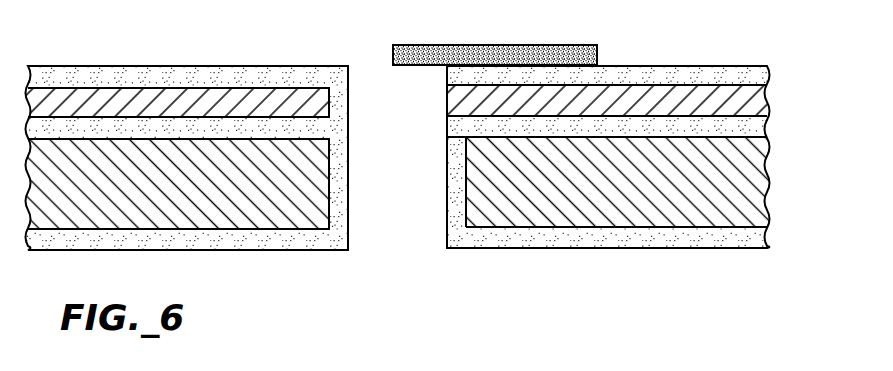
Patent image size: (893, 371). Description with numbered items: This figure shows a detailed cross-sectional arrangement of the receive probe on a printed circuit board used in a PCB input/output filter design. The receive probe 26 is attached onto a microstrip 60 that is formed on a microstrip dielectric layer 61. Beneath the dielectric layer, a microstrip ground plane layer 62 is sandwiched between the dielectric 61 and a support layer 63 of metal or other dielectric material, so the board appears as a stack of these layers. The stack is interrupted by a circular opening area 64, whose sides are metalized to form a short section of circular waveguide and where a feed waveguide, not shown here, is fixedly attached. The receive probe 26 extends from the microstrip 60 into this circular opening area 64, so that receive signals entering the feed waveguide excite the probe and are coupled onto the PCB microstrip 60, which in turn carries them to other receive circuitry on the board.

The receive probe 26 is at (460, 44).
The microstrip 60 is at (762, 76).
The microstrip dielectric layer 61 is at (767, 106).
The microstrip ground plane layer 62 is at (760, 128).
The support layer 63 is at (760, 197).
The circular opening area 64 is at (388, 236).